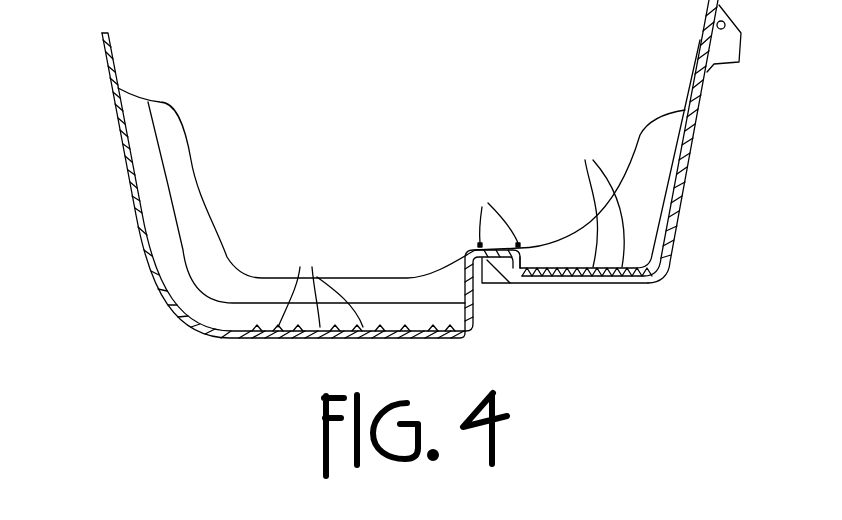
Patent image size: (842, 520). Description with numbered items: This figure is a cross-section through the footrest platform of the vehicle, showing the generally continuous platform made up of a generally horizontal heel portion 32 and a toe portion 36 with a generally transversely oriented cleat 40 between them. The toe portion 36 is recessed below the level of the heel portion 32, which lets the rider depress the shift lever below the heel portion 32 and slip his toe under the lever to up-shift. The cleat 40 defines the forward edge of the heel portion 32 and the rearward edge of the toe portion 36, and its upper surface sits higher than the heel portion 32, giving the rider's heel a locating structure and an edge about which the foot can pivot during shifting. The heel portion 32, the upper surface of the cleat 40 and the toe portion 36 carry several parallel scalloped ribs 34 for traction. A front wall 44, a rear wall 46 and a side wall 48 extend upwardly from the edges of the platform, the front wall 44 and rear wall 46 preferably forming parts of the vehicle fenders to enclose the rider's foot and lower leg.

The heel portion 32 is at (548, 225).
The scalloped ribs 34 is at (451, 229).
The toe portion 36 is at (292, 214).
The cleat 40 is at (502, 296).
The front wall 44 is at (138, 213).
The rear wall 46 is at (686, 174).
The side wall 48 is at (373, 292).